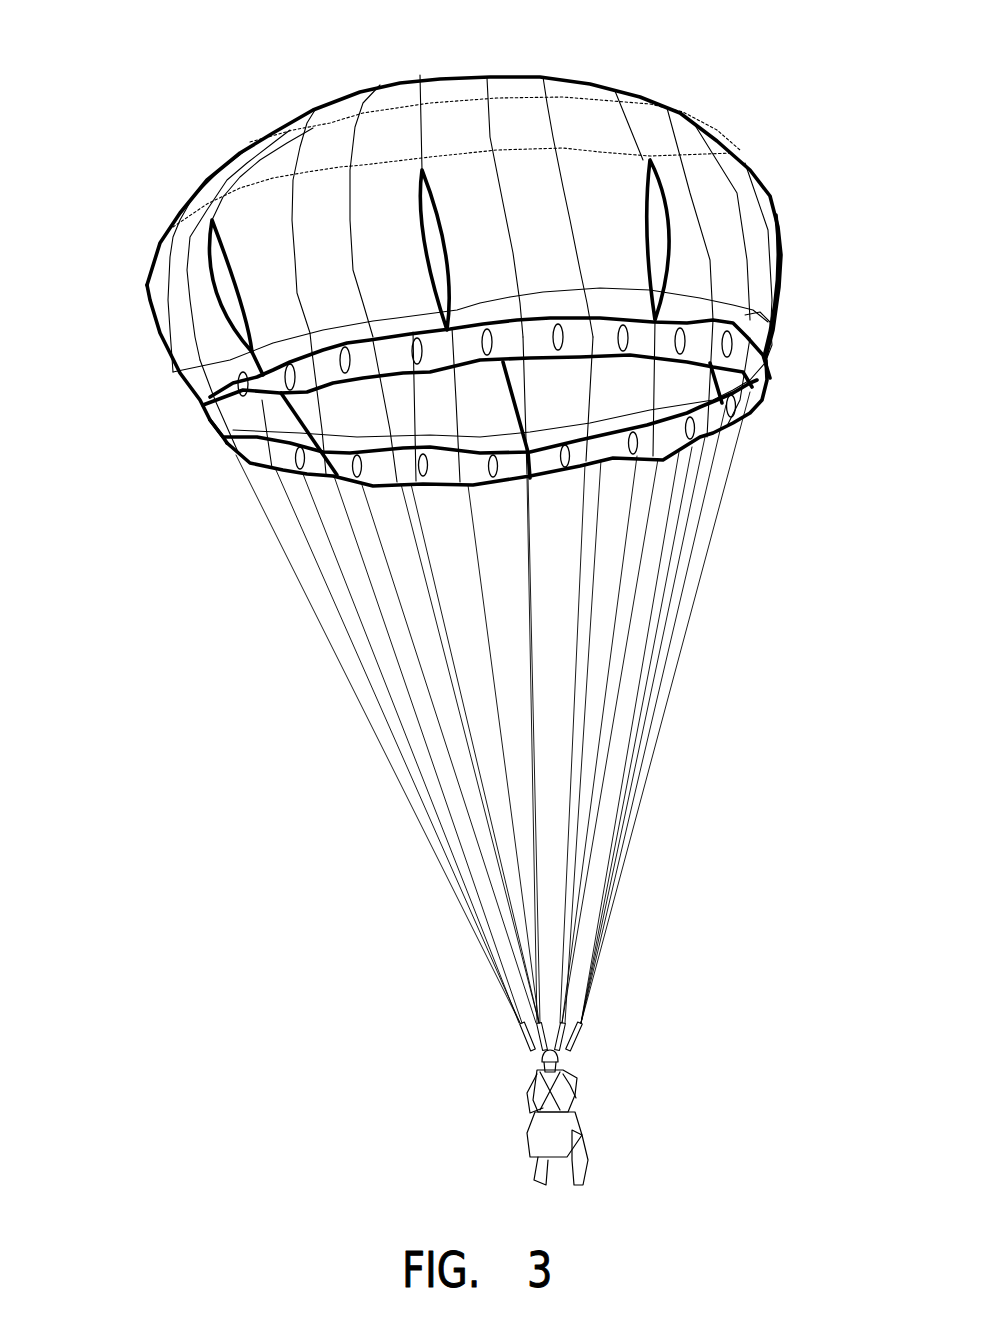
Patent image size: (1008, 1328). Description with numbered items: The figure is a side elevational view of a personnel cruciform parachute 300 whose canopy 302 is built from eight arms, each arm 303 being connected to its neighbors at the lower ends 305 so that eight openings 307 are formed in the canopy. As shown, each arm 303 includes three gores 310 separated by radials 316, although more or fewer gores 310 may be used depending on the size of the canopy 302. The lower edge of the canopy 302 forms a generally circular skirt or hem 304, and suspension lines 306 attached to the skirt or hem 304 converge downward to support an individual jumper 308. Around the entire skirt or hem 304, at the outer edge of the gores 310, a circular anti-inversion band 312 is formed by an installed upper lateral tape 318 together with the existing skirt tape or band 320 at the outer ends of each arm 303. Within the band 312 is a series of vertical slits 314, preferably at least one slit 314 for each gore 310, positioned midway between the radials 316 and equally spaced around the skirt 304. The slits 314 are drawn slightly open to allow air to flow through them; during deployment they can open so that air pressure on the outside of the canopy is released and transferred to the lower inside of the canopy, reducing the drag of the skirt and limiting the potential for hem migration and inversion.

The cruciform parachute 300 is at (190, 136).
The canopy 302 is at (271, 100).
The arm 303 is at (467, 90).
The skirt or hem 304 is at (720, 435).
The lower ends 305 is at (250, 384).
The suspension lines 306 is at (310, 560).
The openings 307 is at (223, 291).
The individual jumper 308 is at (567, 1110).
The gores 310 is at (557, 90).
The anti-inversion band 312 is at (762, 366).
The vertical slits 314 is at (558, 337).
The radials 316 is at (513, 205).
The upper lateral tape 318 is at (743, 330).
The skirt tape or band 320 is at (760, 400).